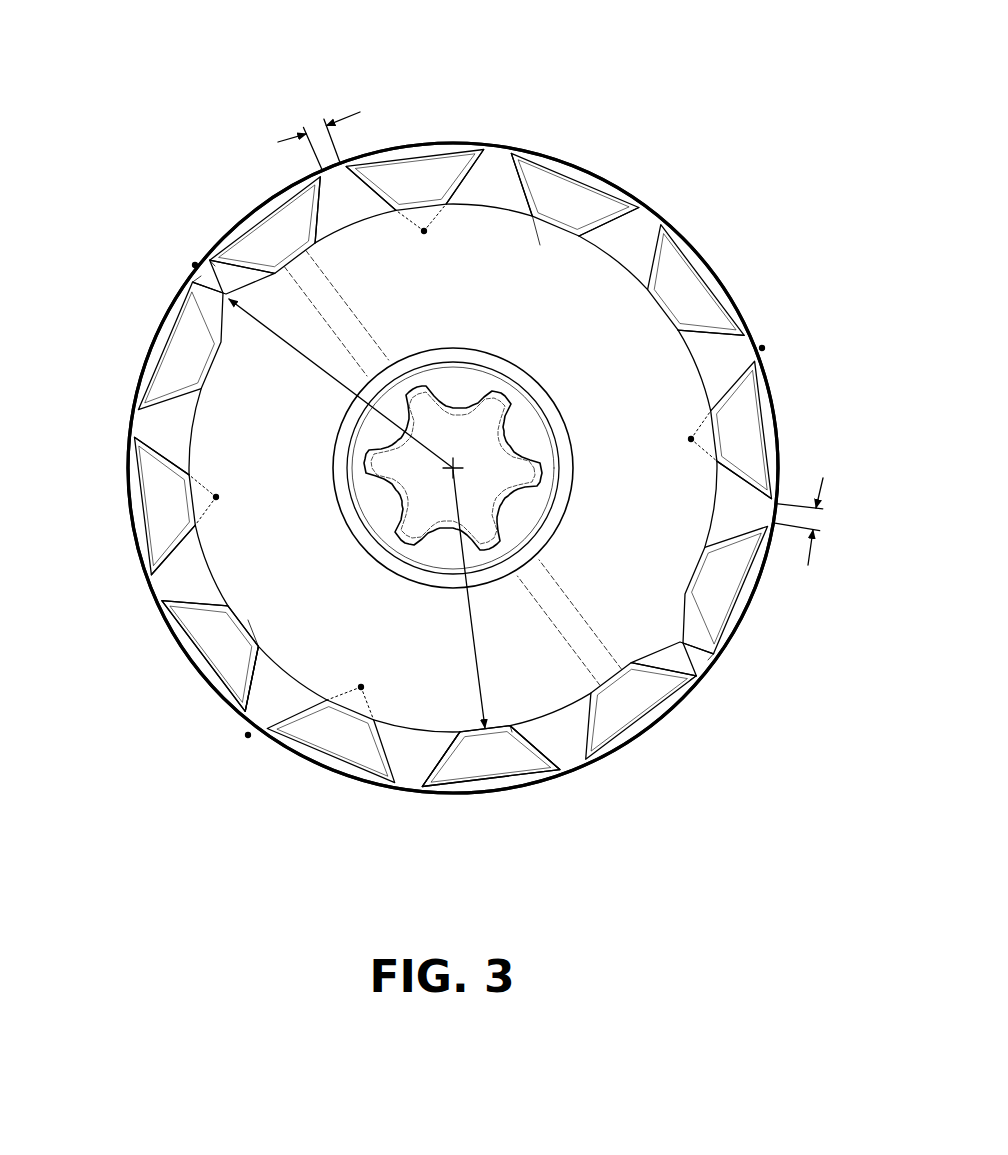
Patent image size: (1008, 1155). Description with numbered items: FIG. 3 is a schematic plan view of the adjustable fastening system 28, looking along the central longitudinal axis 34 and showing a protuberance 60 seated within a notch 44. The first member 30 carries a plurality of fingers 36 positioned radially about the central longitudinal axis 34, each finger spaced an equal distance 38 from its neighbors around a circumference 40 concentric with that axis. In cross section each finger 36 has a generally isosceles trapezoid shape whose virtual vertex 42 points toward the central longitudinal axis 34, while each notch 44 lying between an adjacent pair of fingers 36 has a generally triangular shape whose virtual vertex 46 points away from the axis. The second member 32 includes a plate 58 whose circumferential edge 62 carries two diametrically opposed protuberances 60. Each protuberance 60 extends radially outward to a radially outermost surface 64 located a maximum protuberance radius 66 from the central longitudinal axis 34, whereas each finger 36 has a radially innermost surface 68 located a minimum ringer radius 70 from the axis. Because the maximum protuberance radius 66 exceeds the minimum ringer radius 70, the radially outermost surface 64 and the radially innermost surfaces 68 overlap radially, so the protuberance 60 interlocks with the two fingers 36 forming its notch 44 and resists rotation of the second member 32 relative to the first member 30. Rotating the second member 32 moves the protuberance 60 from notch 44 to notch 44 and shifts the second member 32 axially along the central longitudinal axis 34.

The adjustable fastening system 28 is at (757, 113).
The first member 30 is at (664, 211).
The second member 32 is at (558, 396).
The central longitudinal axis 34 is at (453, 468).
The fingers 36 is at (412, 165).
The distance 38 is at (346, 112).
The circumference 40 is at (715, 663).
The virtual vertex 42 is at (426, 236).
The notches 44 is at (347, 207).
The virtual vertex 46 is at (195, 265).
The plate 58 is at (165, 618).
The protuberance 60 is at (212, 293).
The circumferential edge 62 is at (528, 770).
The radially outermost surface 64 is at (212, 256).
The maximum protuberance radius 66 is at (312, 362).
The radially innermost surface 68 is at (560, 229).
The minimum ringer radius 70 is at (470, 640).